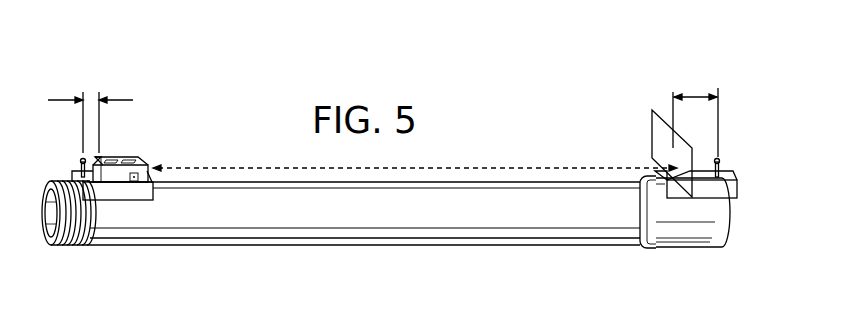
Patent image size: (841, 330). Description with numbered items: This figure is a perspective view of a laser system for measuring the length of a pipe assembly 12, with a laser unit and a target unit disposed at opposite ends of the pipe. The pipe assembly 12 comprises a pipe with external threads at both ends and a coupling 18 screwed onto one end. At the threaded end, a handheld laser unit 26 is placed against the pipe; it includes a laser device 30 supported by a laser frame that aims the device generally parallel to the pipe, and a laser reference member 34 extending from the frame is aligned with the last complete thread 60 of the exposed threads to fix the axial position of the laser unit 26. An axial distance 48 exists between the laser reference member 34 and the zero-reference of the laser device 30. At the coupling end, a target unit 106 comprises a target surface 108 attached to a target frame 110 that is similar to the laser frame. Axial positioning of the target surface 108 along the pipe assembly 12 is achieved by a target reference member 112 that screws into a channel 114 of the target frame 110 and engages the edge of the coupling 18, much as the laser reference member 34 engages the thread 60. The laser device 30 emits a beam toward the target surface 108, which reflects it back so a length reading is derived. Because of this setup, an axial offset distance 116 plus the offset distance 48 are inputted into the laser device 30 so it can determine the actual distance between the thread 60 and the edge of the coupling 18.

The pipe assembly 12 is at (538, 181).
The coupling 18 is at (657, 248).
The handheld laser unit 26 is at (139, 134).
The laser device 30 is at (141, 157).
The laser reference member 34 is at (80, 167).
The axial distance 48 is at (120, 92).
The last complete thread 60 is at (92, 217).
The target unit 106 is at (638, 102).
The target surface 108 is at (663, 143).
The target frame 110 is at (732, 199).
The target reference member 112 is at (723, 163).
The channel 114 is at (703, 198).
The axial offset distance 116 is at (697, 95).